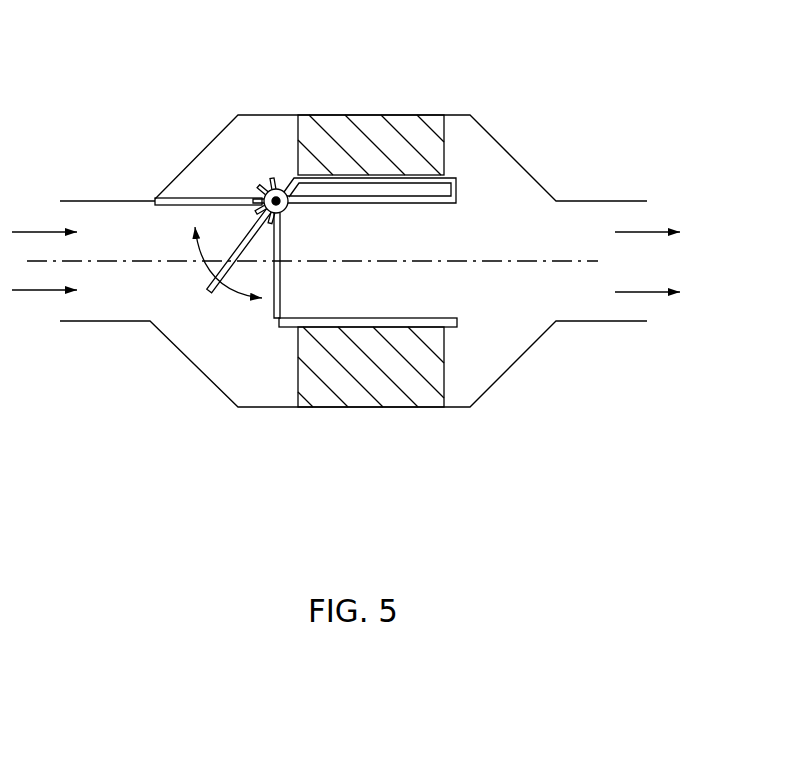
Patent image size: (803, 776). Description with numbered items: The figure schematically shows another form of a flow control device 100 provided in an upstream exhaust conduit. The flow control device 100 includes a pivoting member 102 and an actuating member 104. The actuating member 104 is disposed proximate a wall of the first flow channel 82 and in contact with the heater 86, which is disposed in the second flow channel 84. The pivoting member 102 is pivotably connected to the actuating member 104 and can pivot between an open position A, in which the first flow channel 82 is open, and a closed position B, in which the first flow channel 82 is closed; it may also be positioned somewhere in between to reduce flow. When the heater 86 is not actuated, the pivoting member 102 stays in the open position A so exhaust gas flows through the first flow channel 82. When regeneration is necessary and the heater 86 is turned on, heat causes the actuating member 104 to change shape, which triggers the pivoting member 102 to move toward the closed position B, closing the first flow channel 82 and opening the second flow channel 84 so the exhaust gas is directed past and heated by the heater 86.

The first flow channel 82 is at (477, 285).
The second flow channel 84 is at (475, 162).
The heater 86 is at (372, 115).
The flow control device 100 is at (457, 170).
The pivoting member 102 is at (266, 190).
The actuating member 104 is at (353, 188).
The open position A is at (203, 192).
The closed position B is at (268, 303).